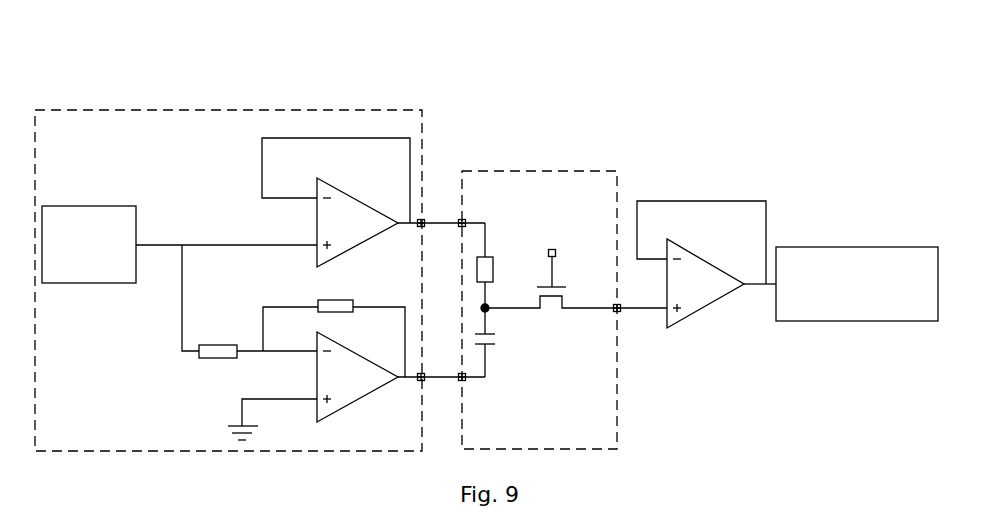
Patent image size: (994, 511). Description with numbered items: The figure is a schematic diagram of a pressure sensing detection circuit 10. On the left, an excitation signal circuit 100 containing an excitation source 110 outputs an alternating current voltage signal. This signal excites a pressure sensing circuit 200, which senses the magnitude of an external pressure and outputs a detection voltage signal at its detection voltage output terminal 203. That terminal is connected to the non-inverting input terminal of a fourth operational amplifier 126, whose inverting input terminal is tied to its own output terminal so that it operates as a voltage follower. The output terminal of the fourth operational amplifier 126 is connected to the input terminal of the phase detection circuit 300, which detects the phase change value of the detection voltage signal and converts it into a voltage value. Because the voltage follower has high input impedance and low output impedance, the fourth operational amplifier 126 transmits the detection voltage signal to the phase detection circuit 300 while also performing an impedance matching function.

The pressure sensing detection circuit 10 is at (530, 84).
The excitation signal circuit 100 is at (225, 110).
The excitation source 110 is at (89, 244).
The pressure sensing circuit 200 is at (535, 171).
The detection voltage output terminal 203 is at (621, 311).
The fourth operational amplifier 126 is at (703, 319).
The phase detection circuit 300 is at (857, 284).